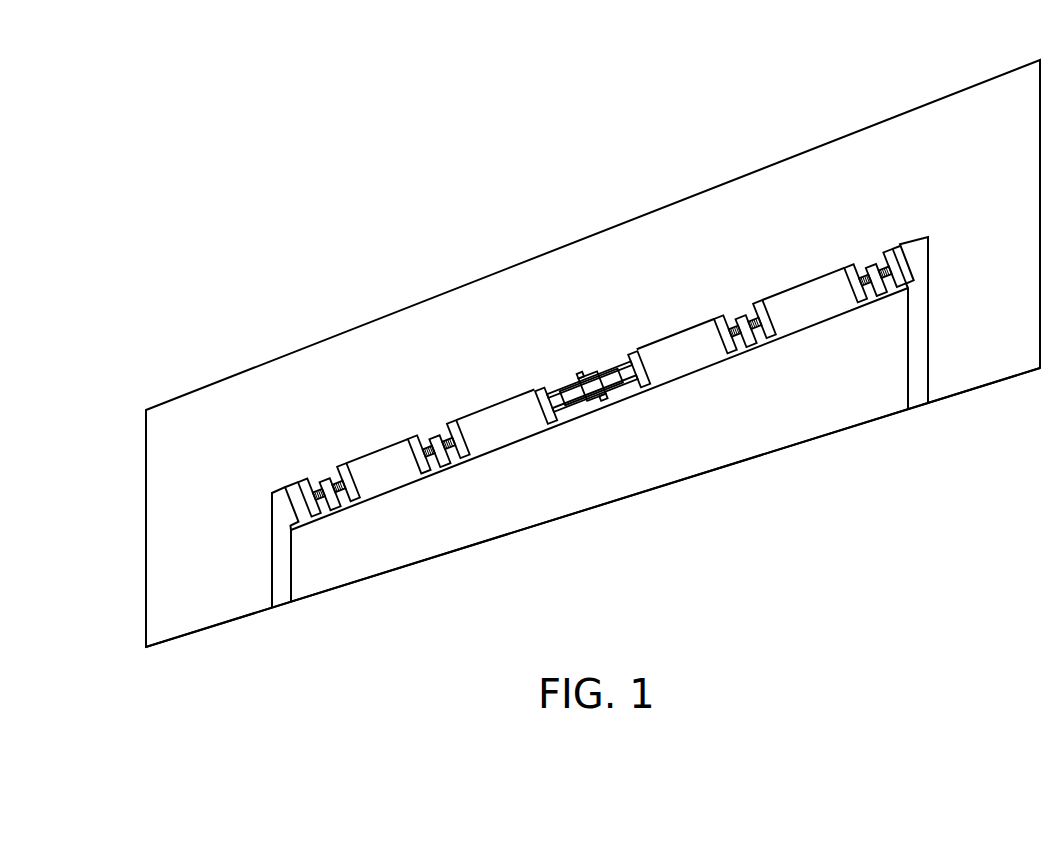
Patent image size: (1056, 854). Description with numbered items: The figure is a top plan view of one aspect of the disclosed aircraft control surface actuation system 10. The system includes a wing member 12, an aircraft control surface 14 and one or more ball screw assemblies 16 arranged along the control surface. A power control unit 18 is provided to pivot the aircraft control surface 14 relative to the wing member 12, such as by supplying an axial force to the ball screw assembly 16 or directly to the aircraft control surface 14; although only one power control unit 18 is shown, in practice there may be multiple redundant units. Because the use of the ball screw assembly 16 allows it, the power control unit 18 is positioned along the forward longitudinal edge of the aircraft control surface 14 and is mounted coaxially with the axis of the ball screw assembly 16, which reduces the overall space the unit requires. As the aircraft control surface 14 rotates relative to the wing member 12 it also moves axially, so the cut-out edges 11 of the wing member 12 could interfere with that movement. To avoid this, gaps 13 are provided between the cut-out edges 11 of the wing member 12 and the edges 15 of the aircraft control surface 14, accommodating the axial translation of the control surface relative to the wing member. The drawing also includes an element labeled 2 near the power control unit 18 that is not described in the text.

The aircraft control surface actuation system 10 is at (445, 132).
The wing member 12 is at (270, 351).
The aircraft control surface 14 is at (430, 568).
The cut-out edges 11 is at (272, 550).
The gaps 13 is at (270, 612).
The edges 15 is at (291, 584).
The ball screw assembly 16 is at (421, 418).
The power control unit 18 is at (579, 370).
The sensor 2 is at (589, 400).